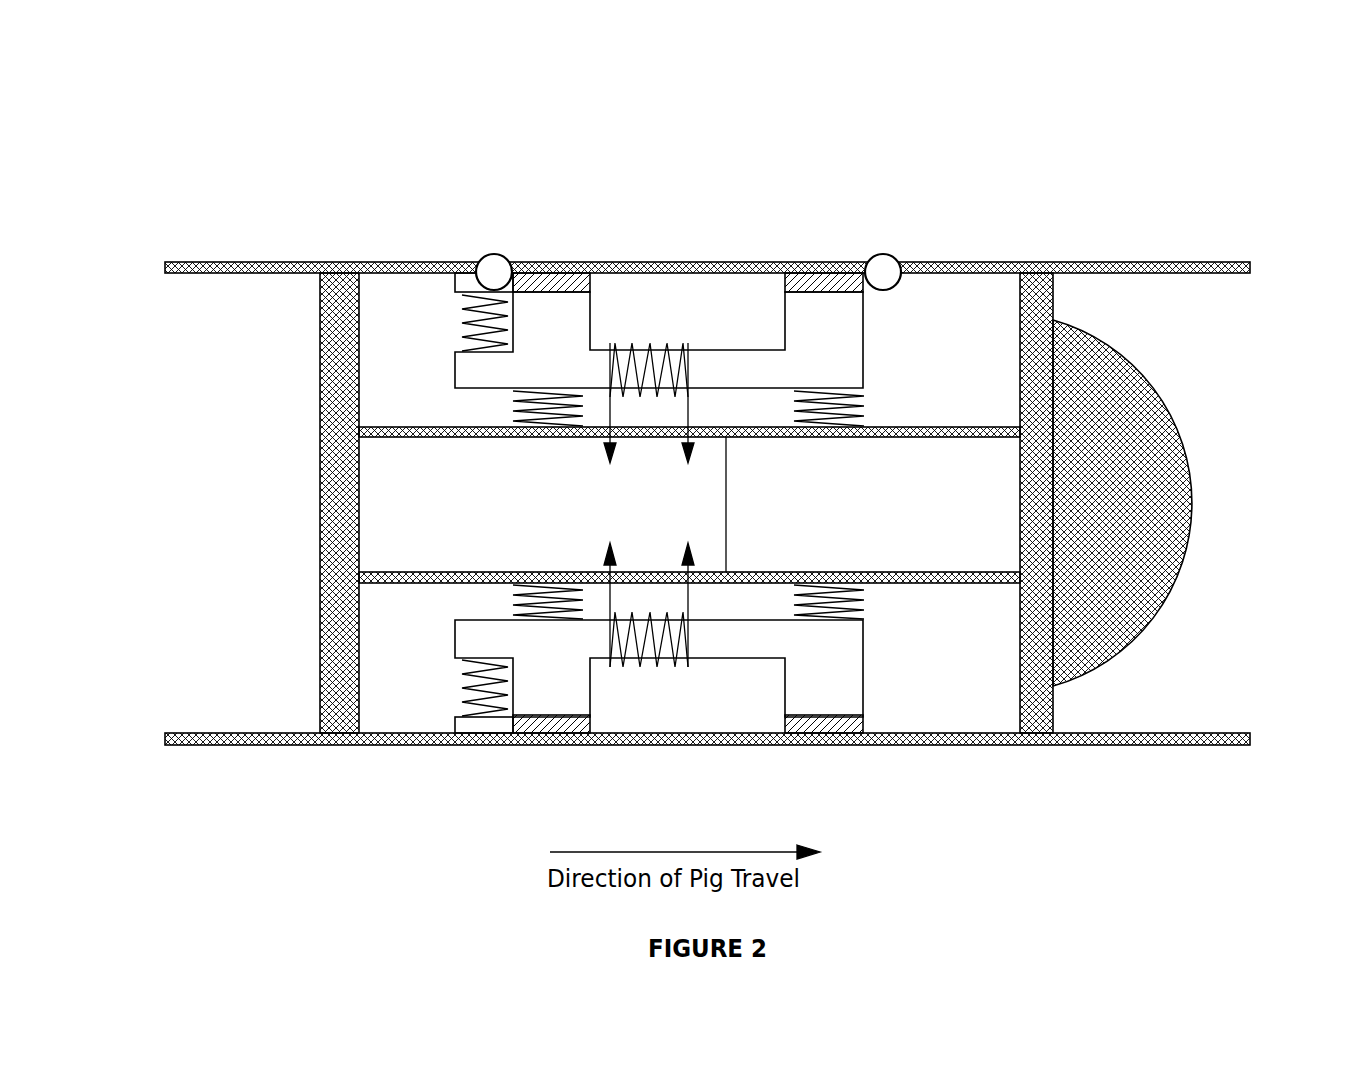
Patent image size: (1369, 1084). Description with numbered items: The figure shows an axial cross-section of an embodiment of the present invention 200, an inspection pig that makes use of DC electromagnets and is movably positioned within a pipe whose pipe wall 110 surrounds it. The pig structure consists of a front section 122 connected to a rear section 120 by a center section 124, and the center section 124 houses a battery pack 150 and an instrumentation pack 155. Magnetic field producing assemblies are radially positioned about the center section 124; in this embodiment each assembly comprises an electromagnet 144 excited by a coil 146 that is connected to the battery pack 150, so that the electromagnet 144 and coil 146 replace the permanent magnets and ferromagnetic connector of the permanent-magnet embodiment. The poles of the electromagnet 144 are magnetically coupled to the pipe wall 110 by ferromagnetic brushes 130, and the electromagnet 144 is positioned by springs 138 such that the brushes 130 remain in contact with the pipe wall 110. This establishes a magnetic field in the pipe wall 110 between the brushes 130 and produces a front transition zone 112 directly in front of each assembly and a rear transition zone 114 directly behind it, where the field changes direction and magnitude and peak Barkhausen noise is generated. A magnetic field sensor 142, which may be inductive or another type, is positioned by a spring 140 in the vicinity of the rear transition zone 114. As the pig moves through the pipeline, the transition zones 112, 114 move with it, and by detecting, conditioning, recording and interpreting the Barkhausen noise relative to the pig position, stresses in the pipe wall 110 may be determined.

The embodiment of the present invention 200 is at (167, 151).
The pipe wall 110 is at (1042, 262).
The front transition zone 112 is at (885, 273).
The rear transition zone 114 is at (490, 270).
The rear section 120 is at (300, 427).
The front section 122 is at (1192, 427).
The center section 124 is at (863, 543).
The ferromagnetic brush 130 is at (570, 280).
The springs 138 is at (870, 405).
The spring 140 is at (453, 283).
The magnetic field sensor 142 is at (453, 330).
The DC electromagnet 144 is at (867, 370).
The coil 146 is at (650, 330).
The battery pack 150 is at (475, 542).
The instrumentation pack 155 is at (887, 583).